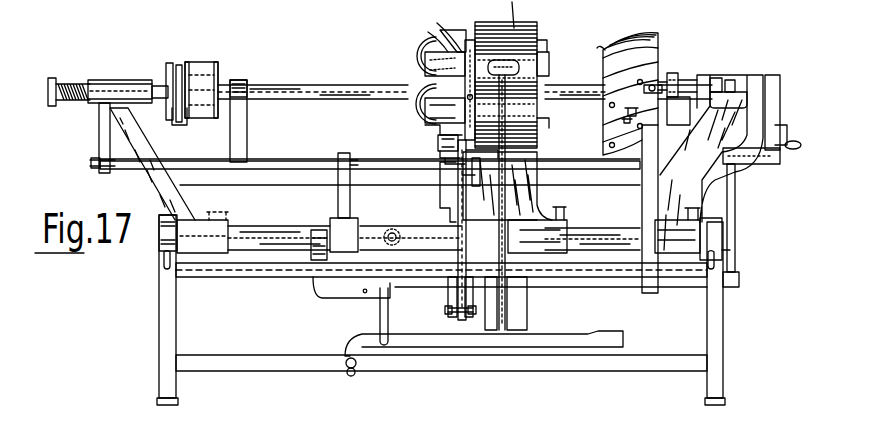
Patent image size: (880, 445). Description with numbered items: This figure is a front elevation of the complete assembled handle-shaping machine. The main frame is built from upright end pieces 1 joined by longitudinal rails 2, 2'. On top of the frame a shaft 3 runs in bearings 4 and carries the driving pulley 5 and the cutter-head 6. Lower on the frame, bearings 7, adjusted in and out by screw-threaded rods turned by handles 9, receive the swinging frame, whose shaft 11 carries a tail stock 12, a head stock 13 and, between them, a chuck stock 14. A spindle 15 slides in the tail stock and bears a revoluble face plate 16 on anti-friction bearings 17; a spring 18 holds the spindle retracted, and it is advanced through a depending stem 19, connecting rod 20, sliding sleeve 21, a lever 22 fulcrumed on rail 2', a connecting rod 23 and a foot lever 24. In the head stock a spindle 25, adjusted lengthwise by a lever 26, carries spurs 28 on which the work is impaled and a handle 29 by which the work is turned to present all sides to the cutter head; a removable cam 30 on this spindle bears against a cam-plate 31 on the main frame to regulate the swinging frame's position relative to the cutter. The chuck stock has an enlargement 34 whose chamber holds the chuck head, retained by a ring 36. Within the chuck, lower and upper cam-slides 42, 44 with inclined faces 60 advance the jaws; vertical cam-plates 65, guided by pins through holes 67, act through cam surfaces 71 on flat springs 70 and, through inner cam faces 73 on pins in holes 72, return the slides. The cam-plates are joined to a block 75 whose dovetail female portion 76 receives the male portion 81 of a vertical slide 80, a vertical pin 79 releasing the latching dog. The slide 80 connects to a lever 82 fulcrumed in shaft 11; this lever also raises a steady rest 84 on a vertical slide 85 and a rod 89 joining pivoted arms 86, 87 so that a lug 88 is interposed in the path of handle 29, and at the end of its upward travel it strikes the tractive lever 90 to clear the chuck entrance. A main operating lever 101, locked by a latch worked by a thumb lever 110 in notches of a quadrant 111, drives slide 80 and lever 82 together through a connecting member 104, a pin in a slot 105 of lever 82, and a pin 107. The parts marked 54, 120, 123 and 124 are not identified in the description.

The upright end pieces 1 is at (158, 330).
The longitudinal rail 2 is at (370, 181).
The longitudinal rail 2' is at (441, 282).
The shaft 3 is at (298, 104).
The bearings 4 is at (163, 82).
The driving pulley 5 is at (201, 62).
The cutter-head 6 is at (660, 50).
The bearings 7 is at (157, 238).
The handles 9 is at (162, 266).
The shaft 11 is at (294, 228).
The tail stock 12 is at (154, 176).
The head stock 13 is at (765, 126).
The chuck stock 14 is at (548, 44).
The spindle 15 is at (76, 102).
The revoluble face plate 16 is at (186, 118).
The anti friction bearings 17 is at (172, 64).
The spring 18 is at (63, 80).
The depending stem 19 is at (98, 136).
The connecting rod 20 is at (310, 162).
The sliding sleeve 21 is at (360, 221).
The lever 22 is at (318, 228).
The connecting rod 23 is at (379, 314).
The foot lever 24 is at (582, 337).
The spindle 25 is at (686, 80).
The lever 26 is at (732, 79).
The spurs 28 is at (650, 86).
The handle 29 is at (781, 136).
The cam 30 is at (672, 73).
The cam-plate 31 is at (678, 111).
The enlargement 34 is at (506, 74).
The ring 36 is at (476, 32).
The cam-slides 42 is at (549, 123).
The cam-slides 44 is at (548, 56).
The rod 54 is at (508, 318).
The inclined bearing faces 60 is at (509, 14).
The vertical cam-plates 65 is at (437, 26).
The holes 67 is at (474, 96).
The resilient members 70 is at (400, 47).
The cam surfaces 71 is at (430, 44).
The holes 72 is at (460, 58).
The inner cam faces 73 is at (460, 30).
The block 75 is at (436, 136).
The female portion 76 is at (438, 152).
The vertical pin 79 is at (440, 145).
The vertical slide 80 is at (440, 209).
The male portion 81 is at (450, 160).
The lever 82 is at (393, 226).
The steady rest 84 is at (612, 124).
The vertical slide 85 is at (642, 193).
The arm 86 is at (764, 164).
The arm 87 is at (732, 258).
The lug 88 is at (790, 149).
The rod 89 is at (736, 210).
The tractive lever 90 is at (512, 195).
The main operating lever 101 is at (456, 198).
The connecting member 104 is at (448, 297).
The slot 105 is at (480, 175).
The pin 107 is at (448, 311).
The thumb lever 110 is at (460, 106).
The quadrant 111 is at (462, 176).
The roller 120 is at (538, 64).
The cam surface 123 is at (630, 35).
The edge 124 is at (600, 48).